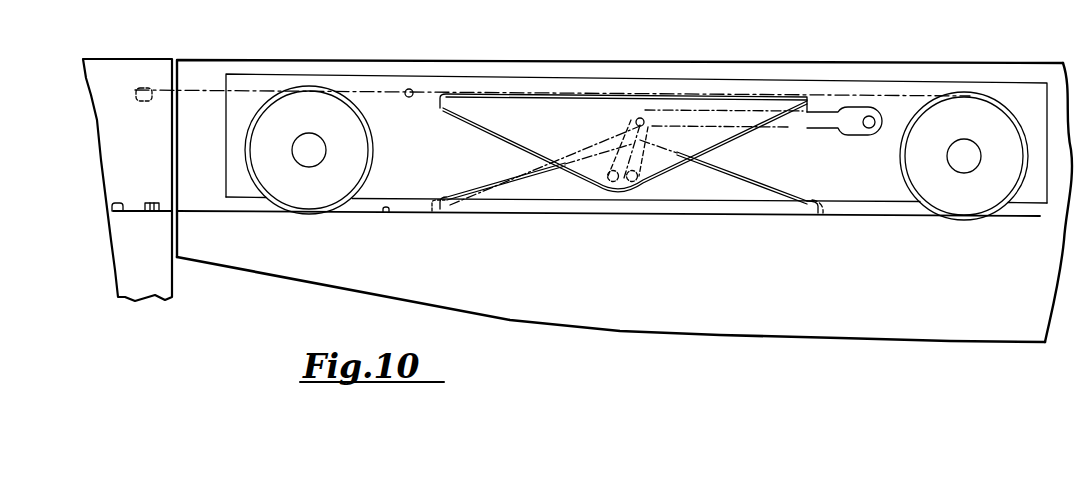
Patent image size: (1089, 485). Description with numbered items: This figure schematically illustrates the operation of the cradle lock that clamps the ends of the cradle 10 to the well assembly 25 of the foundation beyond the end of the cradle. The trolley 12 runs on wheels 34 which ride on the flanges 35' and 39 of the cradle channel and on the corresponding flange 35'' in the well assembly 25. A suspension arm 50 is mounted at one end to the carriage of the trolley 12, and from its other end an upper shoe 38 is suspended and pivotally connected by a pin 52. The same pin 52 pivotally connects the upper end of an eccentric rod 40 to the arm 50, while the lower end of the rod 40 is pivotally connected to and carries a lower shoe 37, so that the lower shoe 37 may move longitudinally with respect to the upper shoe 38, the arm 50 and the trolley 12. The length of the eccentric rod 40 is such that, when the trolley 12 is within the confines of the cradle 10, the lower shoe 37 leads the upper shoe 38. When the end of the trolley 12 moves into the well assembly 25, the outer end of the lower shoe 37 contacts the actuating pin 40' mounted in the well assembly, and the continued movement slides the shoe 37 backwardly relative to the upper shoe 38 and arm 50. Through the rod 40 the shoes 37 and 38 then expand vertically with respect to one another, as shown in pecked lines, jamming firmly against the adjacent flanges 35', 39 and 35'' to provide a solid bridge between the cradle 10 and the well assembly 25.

The cradle 10 is at (273, 272).
The trolley 12 is at (896, 82).
The well assembly 25 is at (112, 63).
The wheels 34 is at (360, 131).
The flange 35' is at (396, 224).
The flange 35'' is at (94, 203).
The lower shoe 37 is at (481, 190).
The upper shoe 38 is at (462, 113).
The flange 39 is at (405, 53).
The eccentric rod 40 is at (686, 146).
The actuating pin 40' is at (281, 188).
The suspension arm 50 is at (848, 136).
The pin 52 is at (636, 121).